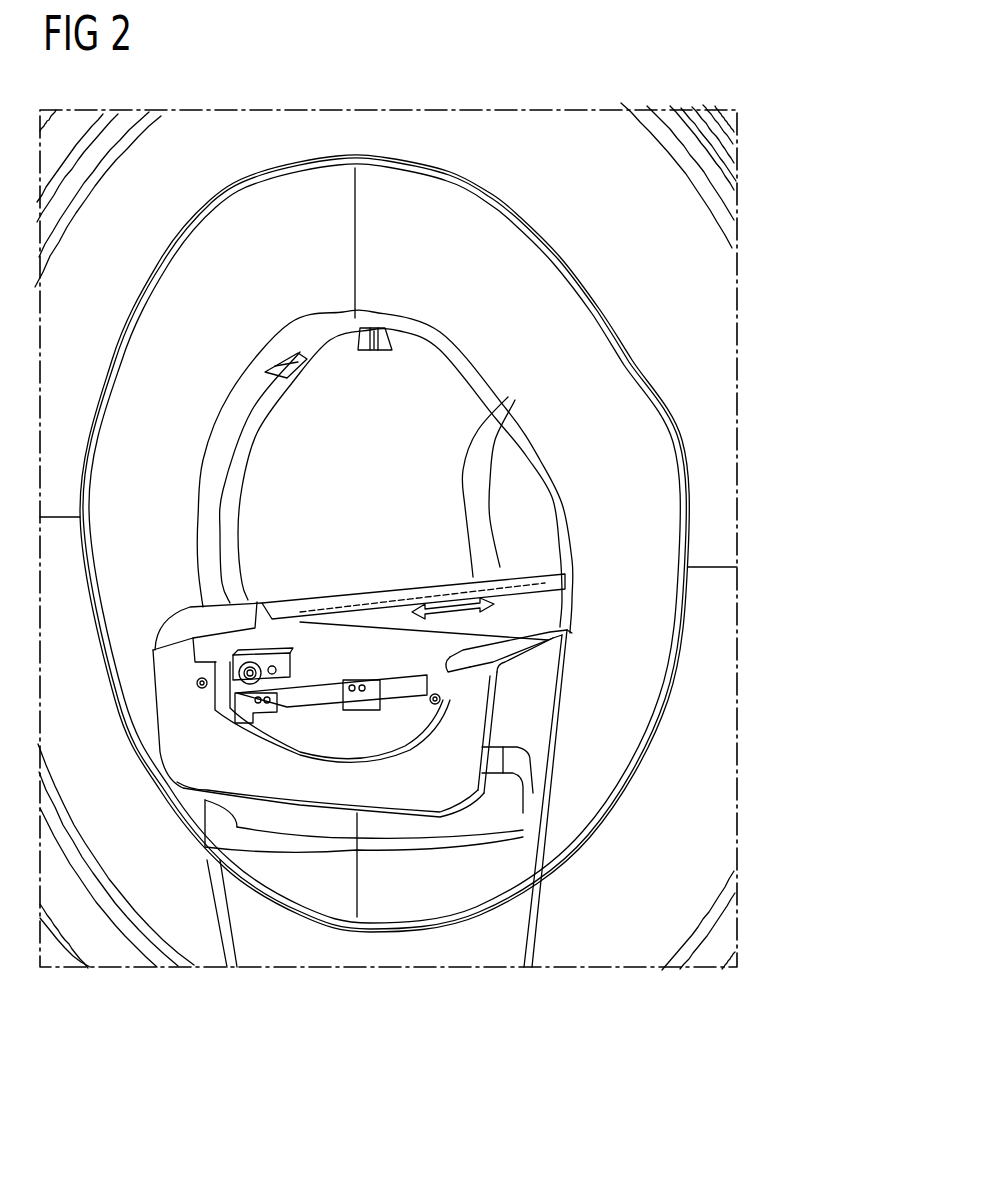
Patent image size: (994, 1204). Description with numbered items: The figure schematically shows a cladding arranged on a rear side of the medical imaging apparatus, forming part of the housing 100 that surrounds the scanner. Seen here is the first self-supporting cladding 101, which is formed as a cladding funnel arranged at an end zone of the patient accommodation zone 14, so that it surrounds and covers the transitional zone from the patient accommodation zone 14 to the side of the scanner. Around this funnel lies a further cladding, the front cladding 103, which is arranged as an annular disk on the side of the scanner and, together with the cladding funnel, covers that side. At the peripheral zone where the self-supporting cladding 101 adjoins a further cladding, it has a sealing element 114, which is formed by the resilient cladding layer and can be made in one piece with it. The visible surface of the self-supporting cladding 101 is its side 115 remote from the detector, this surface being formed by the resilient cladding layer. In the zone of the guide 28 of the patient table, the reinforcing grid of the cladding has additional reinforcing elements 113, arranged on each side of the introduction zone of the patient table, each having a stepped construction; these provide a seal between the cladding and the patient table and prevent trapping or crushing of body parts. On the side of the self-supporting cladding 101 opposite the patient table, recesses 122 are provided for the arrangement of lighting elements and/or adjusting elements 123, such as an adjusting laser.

The housing 100 is at (366, 995).
The first self-supporting cladding 101 is at (612, 378).
The front cladding 103 is at (740, 806).
The additional reinforcing elements 113 is at (193, 679).
The sealing element 114 is at (575, 282).
The side remote from the detector 115 is at (652, 466).
The recesses 122 is at (362, 322).
The adjusting elements 123 is at (382, 352).
The patient accommodation zone 14 is at (458, 385).
The guide 28 is at (243, 718).